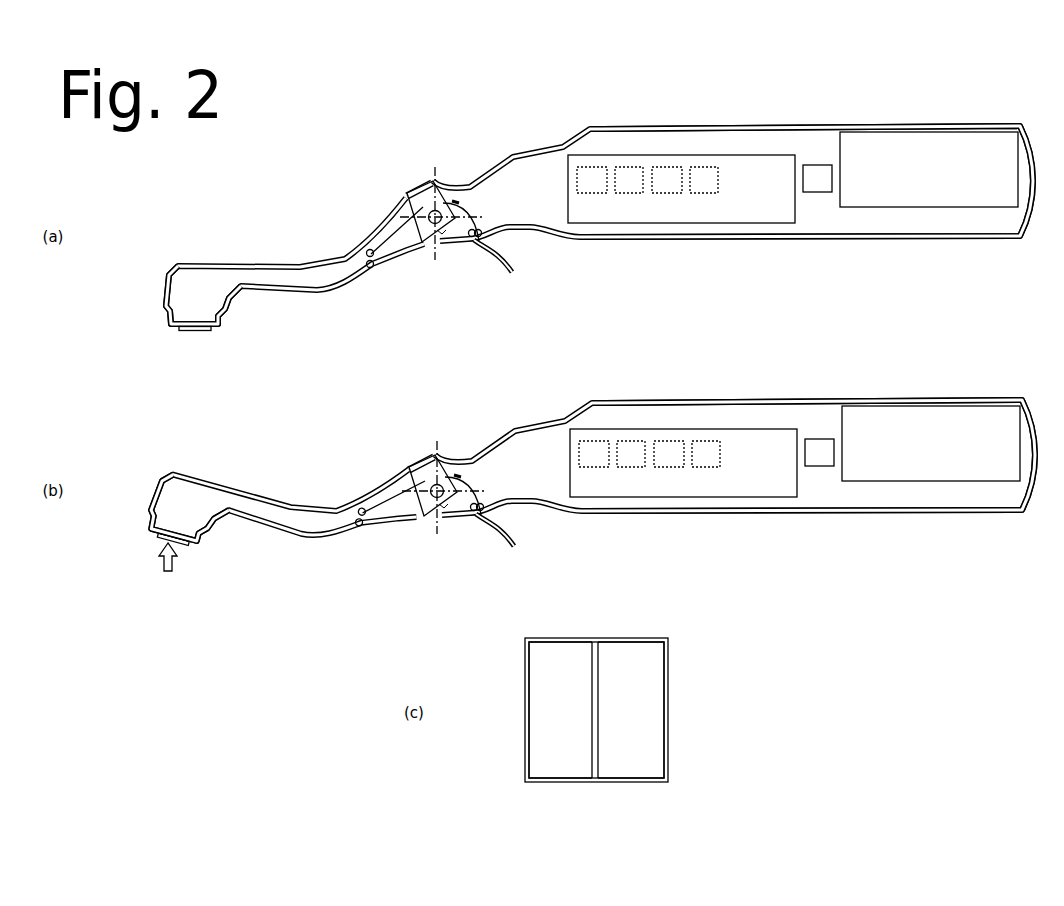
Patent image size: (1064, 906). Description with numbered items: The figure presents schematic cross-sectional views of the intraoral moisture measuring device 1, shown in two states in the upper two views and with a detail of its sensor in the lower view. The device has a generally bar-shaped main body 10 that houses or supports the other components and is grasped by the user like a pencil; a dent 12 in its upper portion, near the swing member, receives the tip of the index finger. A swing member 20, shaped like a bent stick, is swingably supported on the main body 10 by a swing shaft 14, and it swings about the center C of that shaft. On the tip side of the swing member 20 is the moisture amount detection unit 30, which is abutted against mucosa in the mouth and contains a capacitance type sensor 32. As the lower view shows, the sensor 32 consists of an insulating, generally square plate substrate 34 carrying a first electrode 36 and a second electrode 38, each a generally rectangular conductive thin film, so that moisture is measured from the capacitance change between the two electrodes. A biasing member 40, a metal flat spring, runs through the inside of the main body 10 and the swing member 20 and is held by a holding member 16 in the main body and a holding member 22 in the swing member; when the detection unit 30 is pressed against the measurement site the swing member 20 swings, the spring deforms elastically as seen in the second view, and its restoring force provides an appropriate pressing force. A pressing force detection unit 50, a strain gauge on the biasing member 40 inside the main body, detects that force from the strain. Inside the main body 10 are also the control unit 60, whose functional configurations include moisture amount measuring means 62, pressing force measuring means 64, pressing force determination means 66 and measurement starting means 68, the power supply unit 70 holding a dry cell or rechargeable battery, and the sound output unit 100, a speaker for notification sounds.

The intraoral moisture measuring device 1 is at (986, 85).
The main body 10 is at (830, 145).
The dent 12 is at (476, 184).
The swing shaft 14 is at (418, 189).
The holding member 16 is at (499, 400).
The swing member 20 is at (320, 270).
The holding member 22 is at (410, 203).
The moisture amount detection unit 30 is at (188, 333).
The sensor 32 is at (197, 333).
The substrate 34 is at (595, 652).
The first electrode 36 is at (545, 712).
The second electrode 38 is at (646, 712).
The biasing member 40 is at (463, 210).
The pressing force detection unit 50 is at (457, 200).
The control unit 60 is at (763, 172).
The moisture amount measuring means 62 is at (591, 168).
The pressing force measuring means 64 is at (628, 168).
The pressing force determination means 66 is at (665, 168).
The measurement starting means 68 is at (703, 168).
The power supply unit 70 is at (933, 165).
The sound output unit 100 is at (818, 175).
The center of the swing shaft C is at (446, 240).